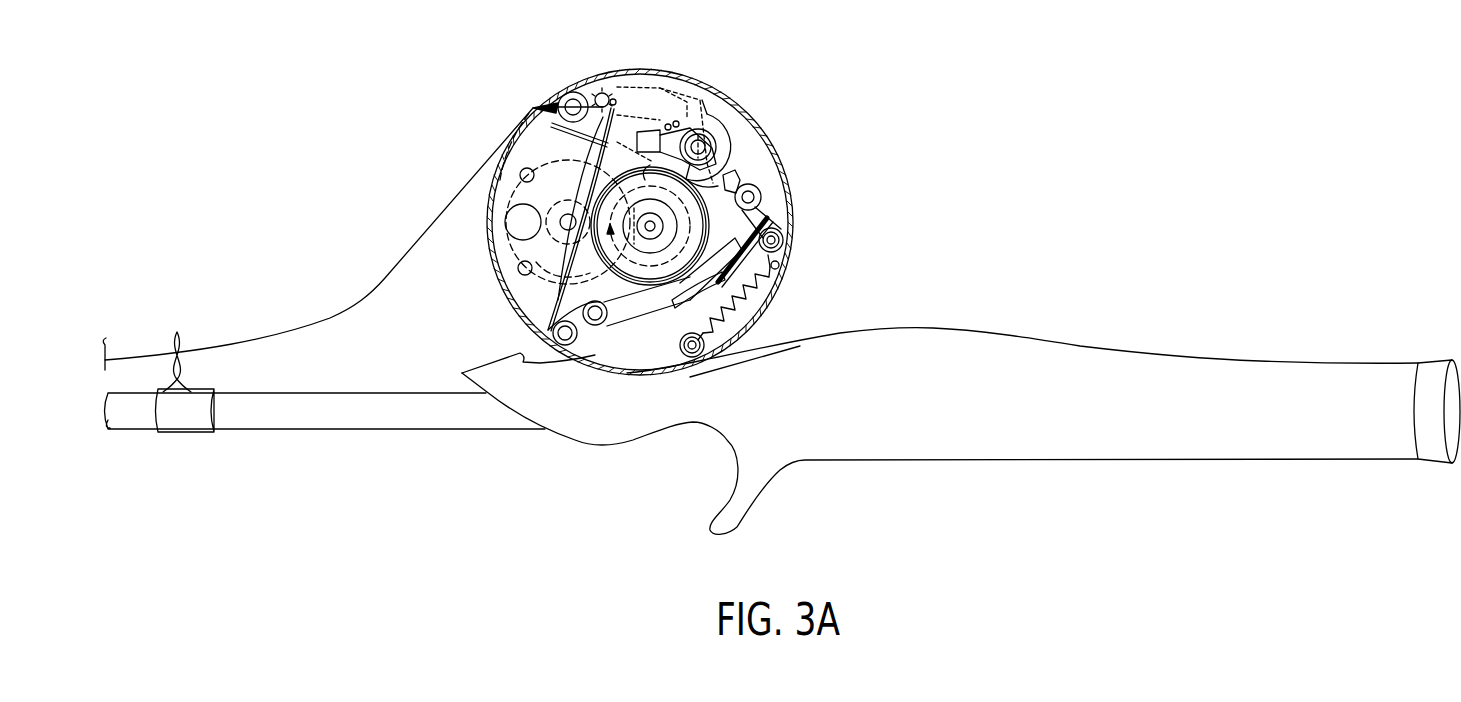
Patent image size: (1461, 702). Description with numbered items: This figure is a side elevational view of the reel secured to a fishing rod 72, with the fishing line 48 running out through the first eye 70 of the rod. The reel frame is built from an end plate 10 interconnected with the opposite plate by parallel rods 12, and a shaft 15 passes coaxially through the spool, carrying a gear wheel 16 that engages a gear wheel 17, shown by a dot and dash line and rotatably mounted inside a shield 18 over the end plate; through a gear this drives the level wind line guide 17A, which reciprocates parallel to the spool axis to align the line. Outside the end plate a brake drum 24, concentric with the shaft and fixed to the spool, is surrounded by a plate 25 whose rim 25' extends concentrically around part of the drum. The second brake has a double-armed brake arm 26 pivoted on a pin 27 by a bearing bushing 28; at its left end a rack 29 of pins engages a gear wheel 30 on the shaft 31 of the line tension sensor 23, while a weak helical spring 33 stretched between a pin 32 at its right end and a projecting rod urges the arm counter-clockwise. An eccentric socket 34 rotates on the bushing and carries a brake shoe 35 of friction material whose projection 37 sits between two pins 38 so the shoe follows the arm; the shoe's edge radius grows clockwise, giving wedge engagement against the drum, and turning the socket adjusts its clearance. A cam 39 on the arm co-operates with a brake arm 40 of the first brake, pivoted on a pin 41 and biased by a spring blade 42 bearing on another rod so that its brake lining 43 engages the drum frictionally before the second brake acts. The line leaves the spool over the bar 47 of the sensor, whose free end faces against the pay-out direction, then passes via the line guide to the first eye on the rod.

The end plate 10 is at (518, 297).
The parallel rods 12 is at (784, 245).
The shaft 15 is at (655, 228).
The gear wheel 16 is at (661, 212).
The gear wheel 17 is at (511, 262).
The line guide (level wind) 17A is at (507, 138).
The shield 18 is at (767, 168).
The line tension sensor 23 is at (628, 70).
The brake drum 24 is at (578, 196).
The plate 25 is at (574, 354).
The rim 25' is at (563, 272).
The brake arm 26 is at (722, 148).
The pin 27 is at (704, 140).
The bearing bushing 28 is at (702, 133).
The rack 29 is at (533, 107).
The gear wheel 30 is at (599, 92).
The shaft 31 is at (612, 98).
The pin 32 is at (780, 267).
The helical spring 33 is at (756, 290).
The socket 34 is at (699, 128).
The brake shoe 35 is at (742, 132).
The projection 37 is at (657, 137).
The pins 38 is at (565, 93).
The cam 39 is at (761, 190).
The brake arm 40 is at (637, 310).
The pin 41 is at (597, 325).
The spring blade 42 is at (777, 222).
The brake lining 43 is at (670, 306).
The bar 47 is at (673, 92).
The fishing line 48 is at (434, 221).
The first eye 70 is at (177, 333).
The fishing rod 72 is at (330, 430).